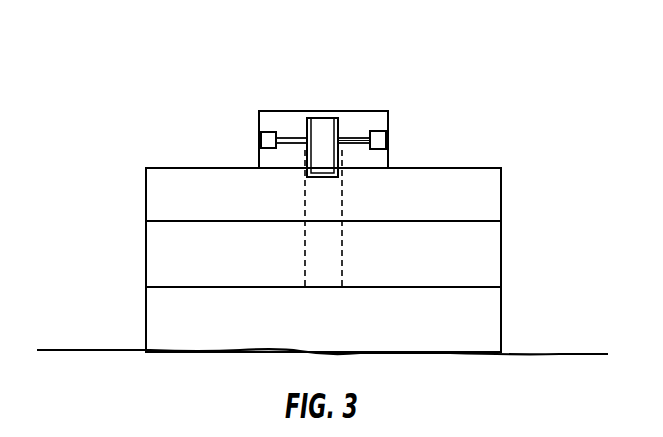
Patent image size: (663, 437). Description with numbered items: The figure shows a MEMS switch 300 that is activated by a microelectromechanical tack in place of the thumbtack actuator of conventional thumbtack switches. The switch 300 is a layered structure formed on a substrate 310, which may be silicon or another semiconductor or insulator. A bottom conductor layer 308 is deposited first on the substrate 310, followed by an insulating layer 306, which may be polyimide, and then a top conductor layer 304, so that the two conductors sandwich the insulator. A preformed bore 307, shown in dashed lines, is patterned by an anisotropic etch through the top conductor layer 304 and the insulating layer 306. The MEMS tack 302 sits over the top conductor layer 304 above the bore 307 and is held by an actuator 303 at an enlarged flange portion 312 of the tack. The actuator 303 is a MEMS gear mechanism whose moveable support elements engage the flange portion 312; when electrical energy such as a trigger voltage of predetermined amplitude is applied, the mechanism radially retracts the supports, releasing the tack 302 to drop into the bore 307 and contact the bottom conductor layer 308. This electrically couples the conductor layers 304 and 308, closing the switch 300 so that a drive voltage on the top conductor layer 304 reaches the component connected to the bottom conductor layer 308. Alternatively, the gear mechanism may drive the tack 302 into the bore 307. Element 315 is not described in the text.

The MEMS switch 300 is at (148, 128).
The MEMS tack 302 is at (323, 150).
The actuator 303 is at (378, 140).
The top conductor layer 304 is at (492, 202).
The insulating layer 306 is at (152, 262).
The preformed bore 307 is at (344, 266).
The bottom conductor layer 308 is at (492, 333).
The substrate 310 is at (520, 394).
The enlarged flange portion 312 is at (345, 136).
The interconnect line 315 is at (352, 140).